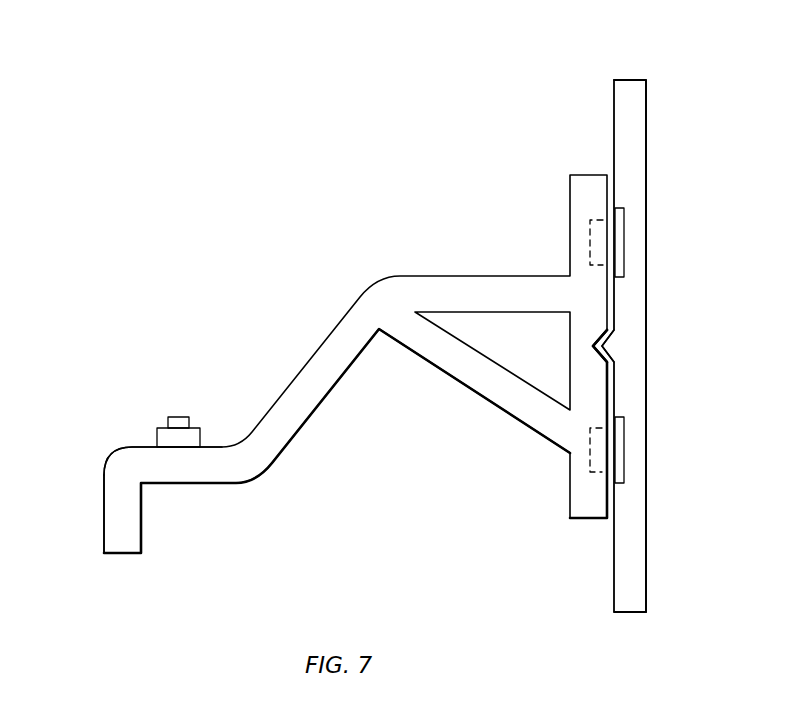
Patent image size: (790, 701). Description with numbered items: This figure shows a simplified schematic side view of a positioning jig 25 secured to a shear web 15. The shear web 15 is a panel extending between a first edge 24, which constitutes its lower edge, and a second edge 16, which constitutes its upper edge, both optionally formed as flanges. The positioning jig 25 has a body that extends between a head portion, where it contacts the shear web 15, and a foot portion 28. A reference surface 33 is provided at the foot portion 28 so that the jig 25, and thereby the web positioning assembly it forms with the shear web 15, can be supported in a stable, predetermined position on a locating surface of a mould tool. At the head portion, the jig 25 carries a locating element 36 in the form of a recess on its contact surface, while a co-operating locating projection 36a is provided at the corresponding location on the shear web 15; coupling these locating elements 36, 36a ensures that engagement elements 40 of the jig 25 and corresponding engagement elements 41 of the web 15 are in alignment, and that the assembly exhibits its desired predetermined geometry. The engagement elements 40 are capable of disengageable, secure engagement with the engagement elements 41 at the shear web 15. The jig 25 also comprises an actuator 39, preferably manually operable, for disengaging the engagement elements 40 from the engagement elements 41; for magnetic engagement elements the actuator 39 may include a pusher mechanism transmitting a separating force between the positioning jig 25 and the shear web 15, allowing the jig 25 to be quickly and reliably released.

The shear web 15 is at (647, 90).
The second edge 16 is at (640, 66).
The first edge 24 is at (630, 613).
The positioning jig 25 is at (378, 238).
The foot portion 28 is at (90, 446).
The reference surface 33 is at (236, 522).
The locating element 36 is at (592, 346).
The locating element 36a is at (605, 346).
The actuator 39 is at (179, 417).
The engagement element 40 is at (586, 470).
The engagement element 41 is at (626, 430).